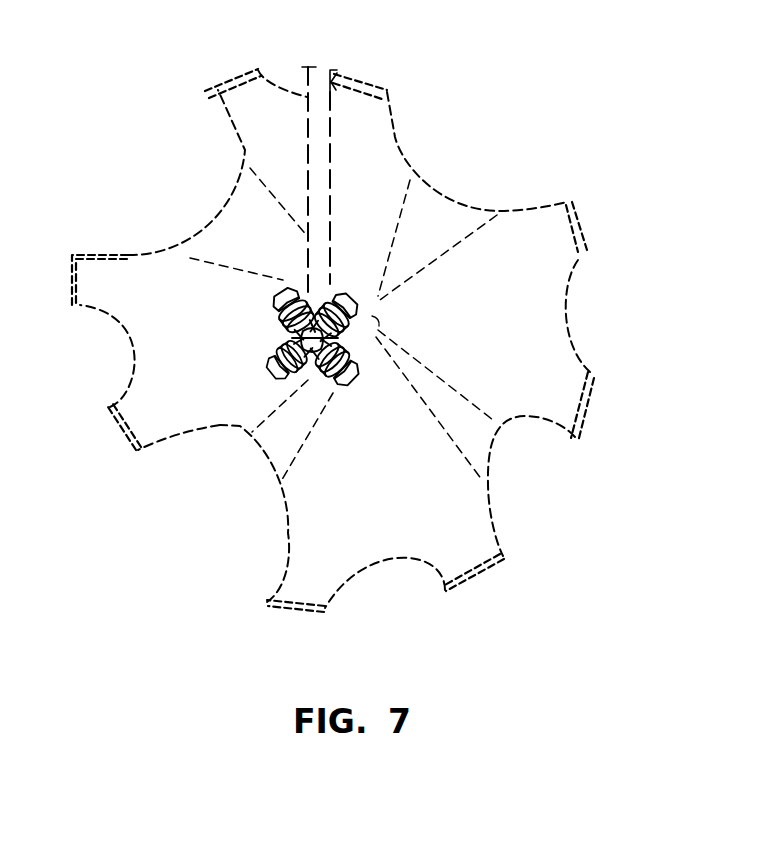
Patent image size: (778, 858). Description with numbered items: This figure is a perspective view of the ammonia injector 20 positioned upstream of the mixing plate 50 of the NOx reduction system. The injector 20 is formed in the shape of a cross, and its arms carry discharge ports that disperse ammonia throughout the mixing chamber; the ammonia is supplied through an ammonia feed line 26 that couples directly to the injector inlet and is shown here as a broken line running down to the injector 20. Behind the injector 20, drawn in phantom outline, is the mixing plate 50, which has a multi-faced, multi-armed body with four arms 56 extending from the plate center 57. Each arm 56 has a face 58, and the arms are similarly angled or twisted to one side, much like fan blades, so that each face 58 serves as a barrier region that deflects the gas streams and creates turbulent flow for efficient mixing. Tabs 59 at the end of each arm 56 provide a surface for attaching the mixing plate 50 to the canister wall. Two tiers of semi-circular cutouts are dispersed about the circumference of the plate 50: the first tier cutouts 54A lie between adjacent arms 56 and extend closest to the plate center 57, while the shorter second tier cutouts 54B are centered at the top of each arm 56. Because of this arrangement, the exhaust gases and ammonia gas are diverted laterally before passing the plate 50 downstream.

The injector 20 is at (293, 368).
The ammonia feed line 26 is at (318, 167).
The mixing plate 50 is at (358, 326).
The first tier cutouts 54A is at (192, 195).
The second tier cutouts 54B is at (587, 333).
The arms 56 is at (246, 117).
The plate center 57 is at (381, 325).
The face 58 is at (168, 350).
The tabs 59 is at (212, 87).